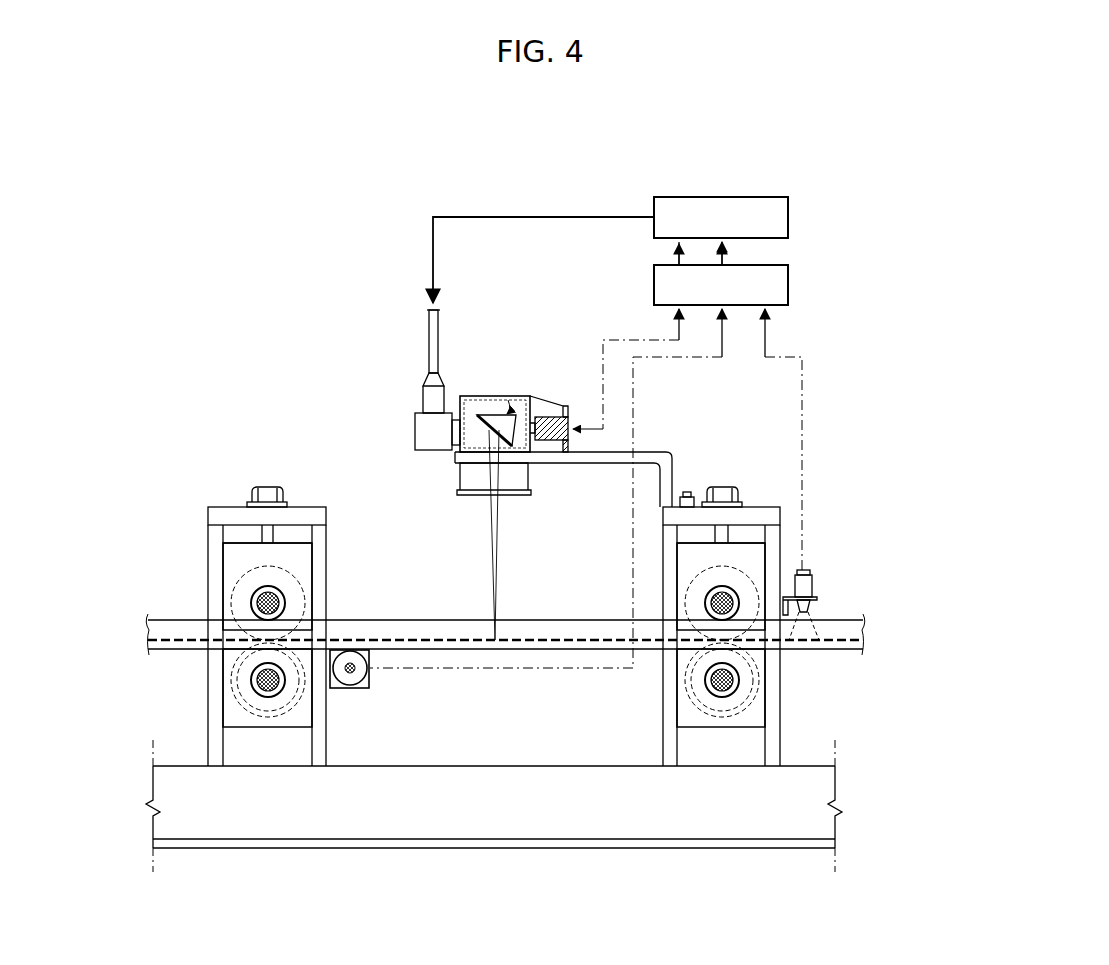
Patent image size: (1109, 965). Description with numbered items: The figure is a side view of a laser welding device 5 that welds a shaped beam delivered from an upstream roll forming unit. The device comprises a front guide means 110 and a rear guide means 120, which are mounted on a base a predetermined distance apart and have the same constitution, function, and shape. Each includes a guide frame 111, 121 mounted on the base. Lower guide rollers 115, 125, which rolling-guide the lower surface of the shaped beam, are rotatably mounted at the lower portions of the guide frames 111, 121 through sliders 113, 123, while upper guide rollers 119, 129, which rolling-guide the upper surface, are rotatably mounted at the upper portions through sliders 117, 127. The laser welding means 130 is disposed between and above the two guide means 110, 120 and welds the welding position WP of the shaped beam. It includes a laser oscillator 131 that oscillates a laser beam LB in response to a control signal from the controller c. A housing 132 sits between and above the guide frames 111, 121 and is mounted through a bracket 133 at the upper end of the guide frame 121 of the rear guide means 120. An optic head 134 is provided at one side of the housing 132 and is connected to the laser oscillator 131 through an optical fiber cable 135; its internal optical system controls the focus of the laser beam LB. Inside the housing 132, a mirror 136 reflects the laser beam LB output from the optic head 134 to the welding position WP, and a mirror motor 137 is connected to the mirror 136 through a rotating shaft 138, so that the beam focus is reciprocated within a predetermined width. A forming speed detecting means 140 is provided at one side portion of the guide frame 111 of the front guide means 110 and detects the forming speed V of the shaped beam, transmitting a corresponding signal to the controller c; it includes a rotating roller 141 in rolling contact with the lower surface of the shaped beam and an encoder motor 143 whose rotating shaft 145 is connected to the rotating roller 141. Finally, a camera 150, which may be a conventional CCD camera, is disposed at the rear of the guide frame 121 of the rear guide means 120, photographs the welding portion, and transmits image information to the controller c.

The laser welding device 5 is at (347, 201).
The front guide means 110 is at (275, 581).
The guide frame 111 is at (312, 514).
The slider 113 is at (233, 722).
The lower guide roller 115 is at (295, 698).
The slider 117 is at (229, 560).
The upper guide roller 119 is at (300, 575).
The rear guide means 120 is at (764, 583).
The guide frame 121 is at (771, 518).
The slider 123 is at (757, 718).
The lower guide roller 125 is at (758, 683).
The slider 127 is at (752, 561).
The upper guide roller 129 is at (758, 615).
The laser welding means 130 is at (519, 381).
The laser oscillator 131 is at (716, 197).
The housing 132 is at (525, 397).
The bracket 133 is at (616, 452).
The optic head 134 is at (418, 412).
The optical fiber cable 135 is at (429, 327).
The mirror 136 is at (491, 413).
The mirror motor 137 is at (553, 417).
The rotating shaft 138 is at (526, 448).
The forming speed detecting means 140 is at (399, 706).
The rotating roller 141 is at (352, 681).
The encoder motor 143 is at (365, 652).
The rotating shaft 145 is at (357, 673).
The camera 150 is at (820, 586).
The controller c is at (790, 285).
The laser beam LB is at (506, 560).
The welding position WP is at (523, 635).
The forming speed V is at (335, 612).